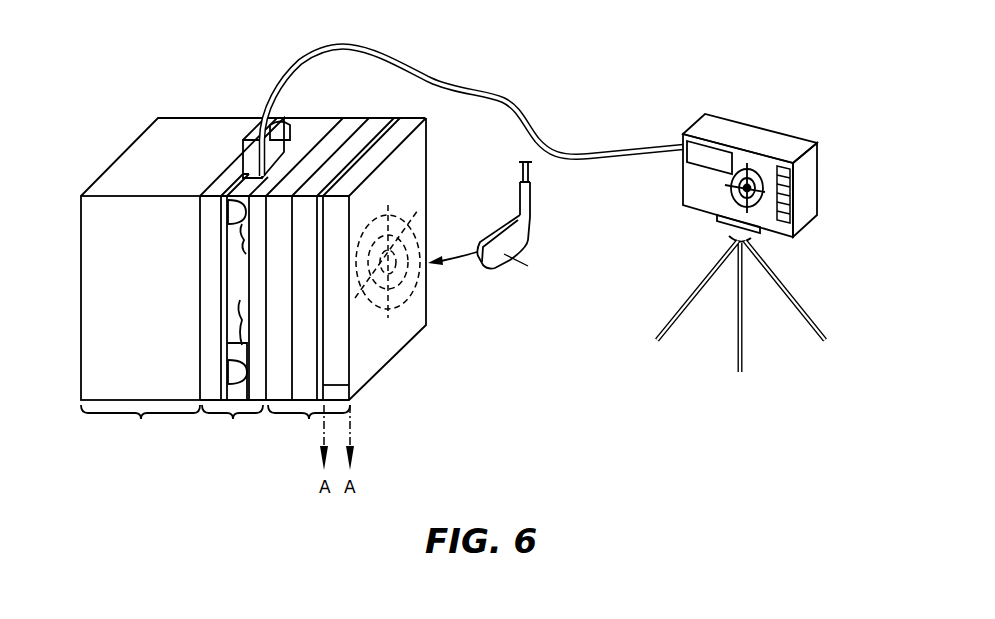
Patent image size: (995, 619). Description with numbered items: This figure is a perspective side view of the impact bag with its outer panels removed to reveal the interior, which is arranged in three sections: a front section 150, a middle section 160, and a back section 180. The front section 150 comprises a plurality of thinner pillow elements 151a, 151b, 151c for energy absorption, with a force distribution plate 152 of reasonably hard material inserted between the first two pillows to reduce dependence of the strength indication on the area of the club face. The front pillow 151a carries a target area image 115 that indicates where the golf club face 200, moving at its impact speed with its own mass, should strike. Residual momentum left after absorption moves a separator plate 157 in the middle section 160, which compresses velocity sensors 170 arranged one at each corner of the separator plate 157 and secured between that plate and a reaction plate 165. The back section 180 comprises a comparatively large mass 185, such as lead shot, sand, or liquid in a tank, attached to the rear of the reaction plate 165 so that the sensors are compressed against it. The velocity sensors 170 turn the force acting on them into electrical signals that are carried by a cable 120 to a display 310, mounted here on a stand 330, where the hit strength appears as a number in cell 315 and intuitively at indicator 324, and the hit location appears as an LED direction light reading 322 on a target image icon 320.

The target area image 115 is at (407, 293).
The cable 120 is at (510, 95).
The front section 150 is at (346, 280).
The front pillow element 151a is at (408, 127).
The pillow element 151b is at (380, 122).
The pillow element 151c is at (363, 80).
The force distribution plate 152 is at (392, 122).
The separator plate 157 is at (330, 122).
The middle section 160 is at (234, 309).
The reaction plate 165 is at (240, 138).
The velocity sensors 170 is at (230, 225).
The back section 180 is at (140, 322).
The mass 185 is at (145, 160).
The golf club face 200 is at (508, 222).
The display 310 is at (693, 195).
The cell 315 is at (682, 137).
The target image icon 320 is at (738, 200).
The LED direction light reading 322 is at (740, 168).
The intuitive hit strength indicator 324 is at (790, 197).
The tripod legs 330 is at (668, 328).